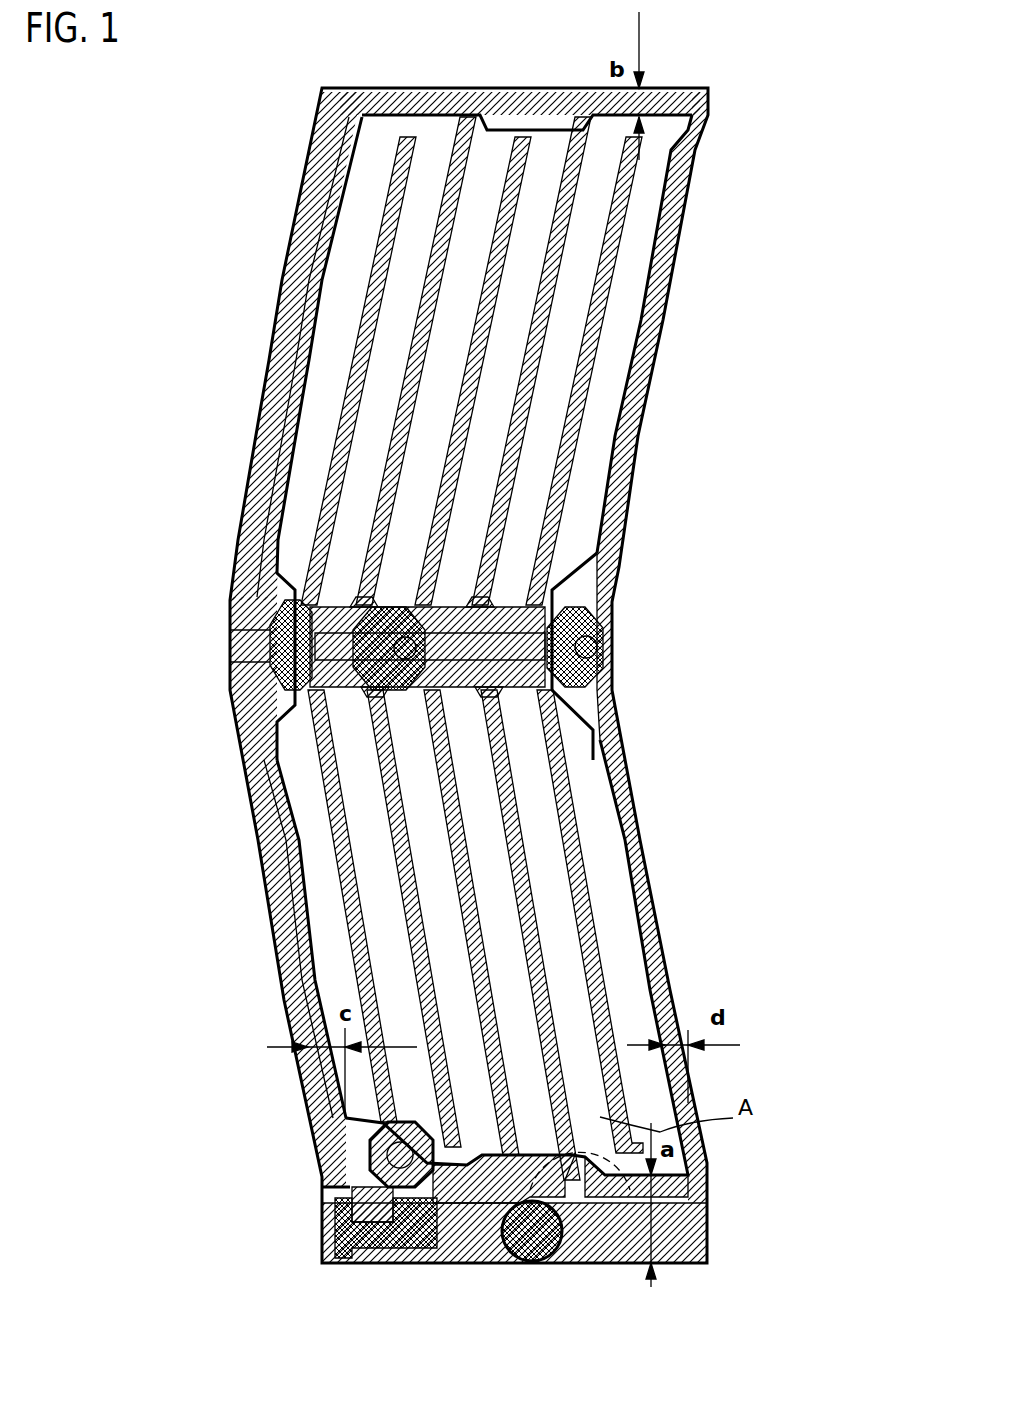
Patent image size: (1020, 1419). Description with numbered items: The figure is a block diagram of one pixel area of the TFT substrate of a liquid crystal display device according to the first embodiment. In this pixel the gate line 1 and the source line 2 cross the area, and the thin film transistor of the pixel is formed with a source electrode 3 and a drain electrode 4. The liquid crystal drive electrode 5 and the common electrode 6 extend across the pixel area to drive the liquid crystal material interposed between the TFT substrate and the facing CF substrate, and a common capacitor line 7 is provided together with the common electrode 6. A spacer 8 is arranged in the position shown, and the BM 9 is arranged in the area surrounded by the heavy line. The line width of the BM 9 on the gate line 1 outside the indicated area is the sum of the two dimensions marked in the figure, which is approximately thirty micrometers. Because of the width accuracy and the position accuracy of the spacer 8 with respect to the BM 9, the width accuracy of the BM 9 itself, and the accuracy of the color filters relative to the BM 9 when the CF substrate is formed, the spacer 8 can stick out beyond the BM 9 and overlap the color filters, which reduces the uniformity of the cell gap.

The gate line 1 is at (707, 1225).
The source line 2 is at (258, 778).
The source electrode 3 is at (425, 1264).
The drain electrode 4 is at (322, 1190).
The liquid crystal drive electrode 5 is at (353, 935).
The common electrode 6 is at (303, 883).
The common capacitor line 7 is at (228, 637).
The spacer 8 is at (540, 1264).
The BM 9 is at (260, 417).